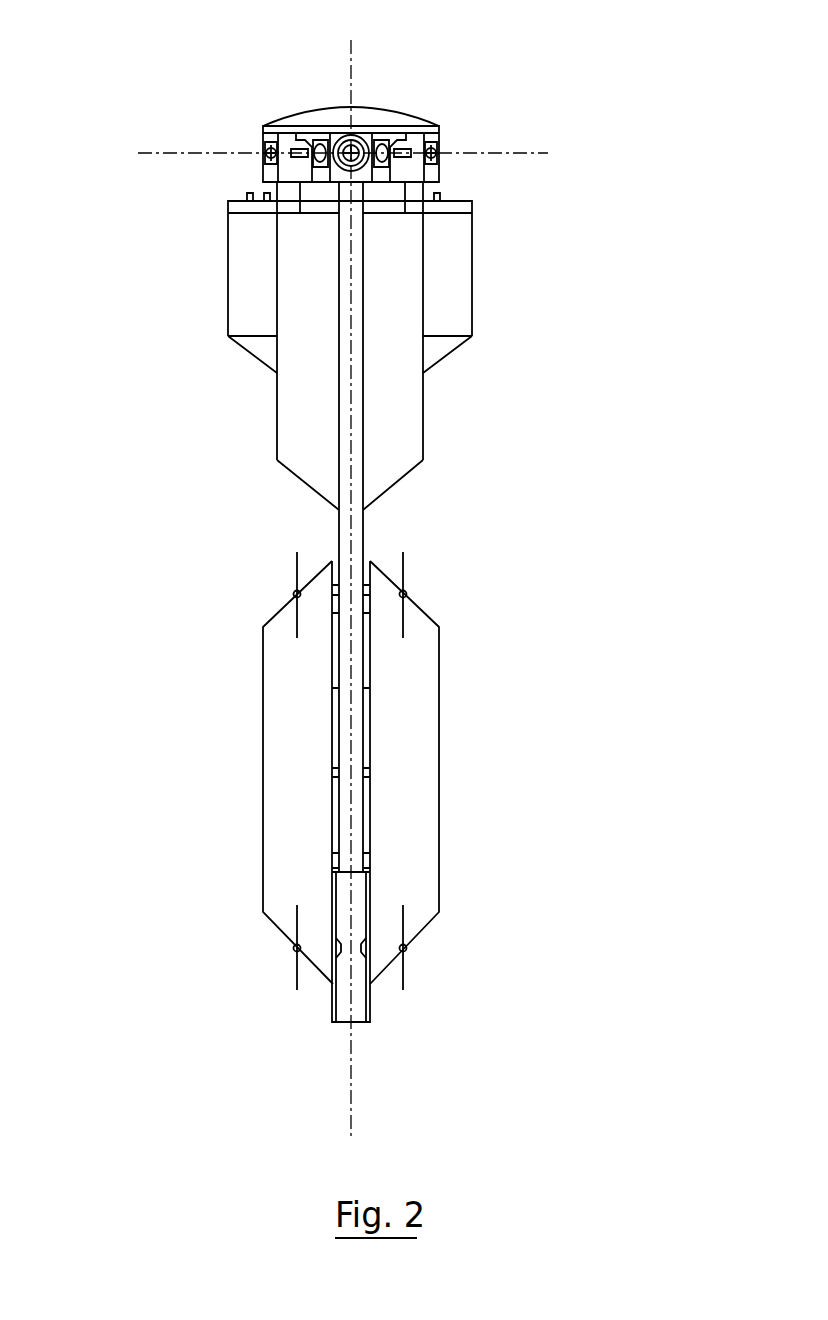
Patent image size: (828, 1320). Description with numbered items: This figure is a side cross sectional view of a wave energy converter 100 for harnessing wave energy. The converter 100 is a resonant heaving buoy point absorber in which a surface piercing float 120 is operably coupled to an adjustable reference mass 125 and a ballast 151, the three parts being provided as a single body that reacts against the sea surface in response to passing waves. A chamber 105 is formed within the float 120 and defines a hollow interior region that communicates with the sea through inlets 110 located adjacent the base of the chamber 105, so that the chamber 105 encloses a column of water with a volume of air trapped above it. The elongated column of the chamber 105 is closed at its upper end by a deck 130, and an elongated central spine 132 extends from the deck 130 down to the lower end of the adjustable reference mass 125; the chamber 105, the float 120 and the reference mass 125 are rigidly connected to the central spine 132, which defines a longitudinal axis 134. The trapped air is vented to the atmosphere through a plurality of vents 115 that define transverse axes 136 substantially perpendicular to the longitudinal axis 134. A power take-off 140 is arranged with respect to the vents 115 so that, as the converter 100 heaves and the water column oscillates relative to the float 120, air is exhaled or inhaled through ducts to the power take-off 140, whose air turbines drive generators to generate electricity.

The wave energy converter 100 is at (574, 98).
The chamber 105 is at (427, 417).
The inlets 110 is at (307, 463).
The vents 115 is at (264, 150).
The surface piercing float 120 is at (450, 276).
The adjustable reference mass 125 is at (403, 793).
The deck 130 is at (381, 117).
The central spine 132 is at (362, 530).
The longitudinal axis 134 is at (350, 1103).
The transverse axes 136 is at (376, 181).
The power take-off 140 is at (340, 162).
The ballast 151 is at (362, 1013).